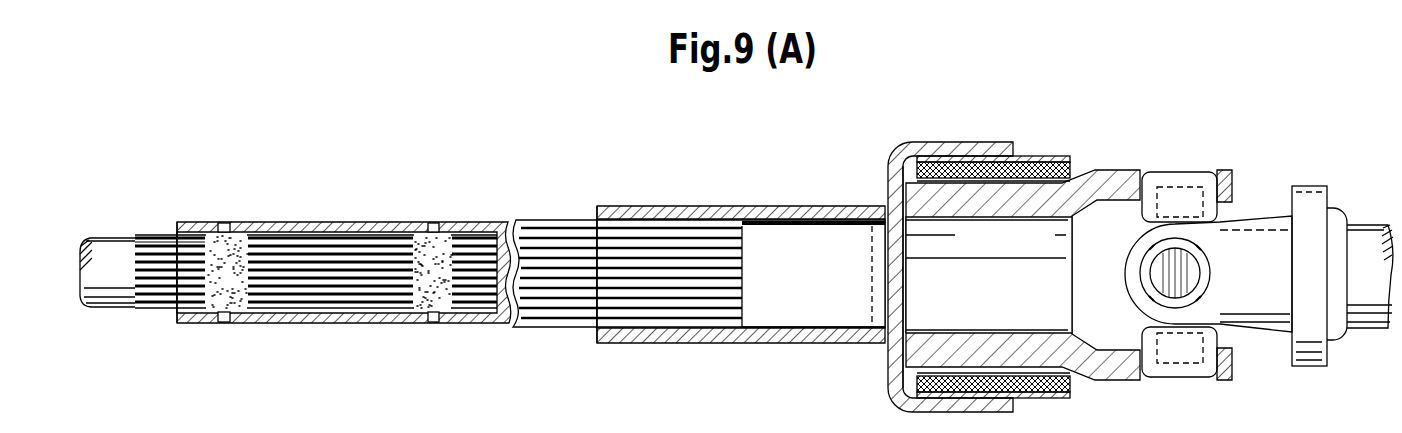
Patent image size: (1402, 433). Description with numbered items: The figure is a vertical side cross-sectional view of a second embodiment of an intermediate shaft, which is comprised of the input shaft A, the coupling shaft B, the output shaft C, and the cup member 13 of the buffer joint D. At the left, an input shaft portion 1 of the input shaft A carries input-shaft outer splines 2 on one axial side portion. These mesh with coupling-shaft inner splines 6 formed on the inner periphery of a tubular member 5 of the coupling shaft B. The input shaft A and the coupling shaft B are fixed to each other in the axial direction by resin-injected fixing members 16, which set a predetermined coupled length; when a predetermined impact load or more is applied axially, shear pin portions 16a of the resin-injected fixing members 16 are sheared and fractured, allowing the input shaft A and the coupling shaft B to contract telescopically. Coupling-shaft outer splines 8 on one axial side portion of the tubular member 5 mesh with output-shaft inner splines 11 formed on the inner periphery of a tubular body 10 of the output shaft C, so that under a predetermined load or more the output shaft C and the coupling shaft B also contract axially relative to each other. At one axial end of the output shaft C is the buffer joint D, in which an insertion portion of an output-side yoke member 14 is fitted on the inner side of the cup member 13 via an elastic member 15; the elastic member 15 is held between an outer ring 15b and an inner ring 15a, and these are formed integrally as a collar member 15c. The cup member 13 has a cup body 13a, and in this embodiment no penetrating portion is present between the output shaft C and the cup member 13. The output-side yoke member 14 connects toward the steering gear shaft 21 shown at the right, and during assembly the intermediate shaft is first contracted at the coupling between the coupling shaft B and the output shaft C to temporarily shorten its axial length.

The input shaft A is at (113, 227).
The coupling shaft B is at (362, 221).
The output shaft C is at (649, 205).
The buffer joint D is at (997, 141).
The input shaft portion 1 is at (118, 308).
The input-shaft outer splines 2 is at (325, 300).
The tubular member 5 is at (290, 222).
The coupling-shaft inner splines 6 is at (287, 300).
The coupling-shaft outer splines 8 is at (577, 220).
The tubular body 10 is at (737, 206).
The output-shaft inner splines 11 is at (663, 326).
The cup member 13 is at (915, 134).
The cup body 13a is at (887, 173).
The output-side yoke member 14 is at (1129, 168).
The elastic member 15 is at (1068, 169).
The inner ring 15a is at (1021, 186).
The outer ring 15b is at (1058, 157).
The collar member 15c is at (991, 184).
The resin-injected fixing members 16 is at (220, 322).
The shear pin portions 16a is at (225, 226).
The steering gear shaft 21 is at (1366, 227).